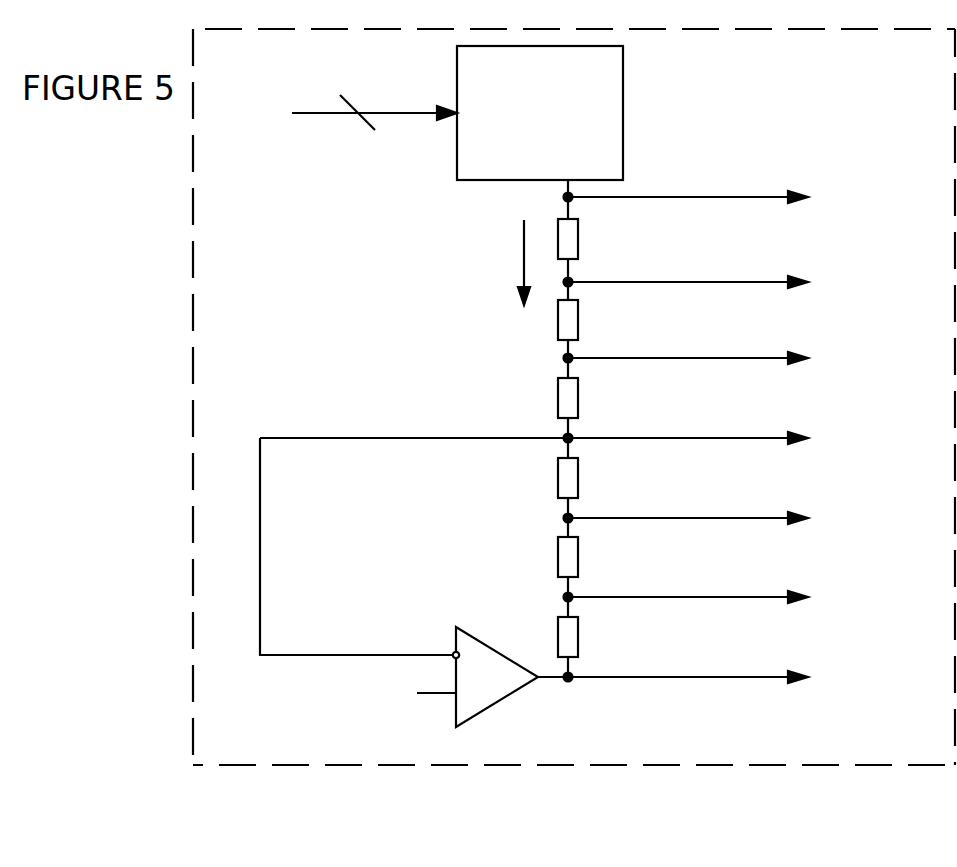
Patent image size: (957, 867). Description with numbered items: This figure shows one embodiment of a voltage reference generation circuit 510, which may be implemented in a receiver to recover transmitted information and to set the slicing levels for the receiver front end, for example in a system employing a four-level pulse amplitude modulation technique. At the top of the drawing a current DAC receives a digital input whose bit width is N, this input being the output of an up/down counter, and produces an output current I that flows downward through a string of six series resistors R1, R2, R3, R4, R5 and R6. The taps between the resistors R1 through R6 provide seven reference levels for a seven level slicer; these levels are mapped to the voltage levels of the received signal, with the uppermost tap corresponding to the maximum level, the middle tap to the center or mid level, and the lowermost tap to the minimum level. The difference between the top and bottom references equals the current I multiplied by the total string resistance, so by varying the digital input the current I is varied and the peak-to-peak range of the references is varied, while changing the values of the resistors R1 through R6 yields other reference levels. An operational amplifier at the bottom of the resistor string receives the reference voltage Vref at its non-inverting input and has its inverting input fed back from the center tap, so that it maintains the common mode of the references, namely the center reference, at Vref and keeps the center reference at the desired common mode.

The reference generation circuit 510 is at (574, 397).
The resistor R1 is at (596, 239).
The resistor R2 is at (596, 320).
The resistor R3 is at (596, 398).
The resistor R4 is at (596, 478).
The resistor R5 is at (596, 557).
The resistor R6 is at (596, 637).
The digital input bit width N is at (374, 96).
The current I is at (508, 262).
The reference voltage Vref is at (415, 693).